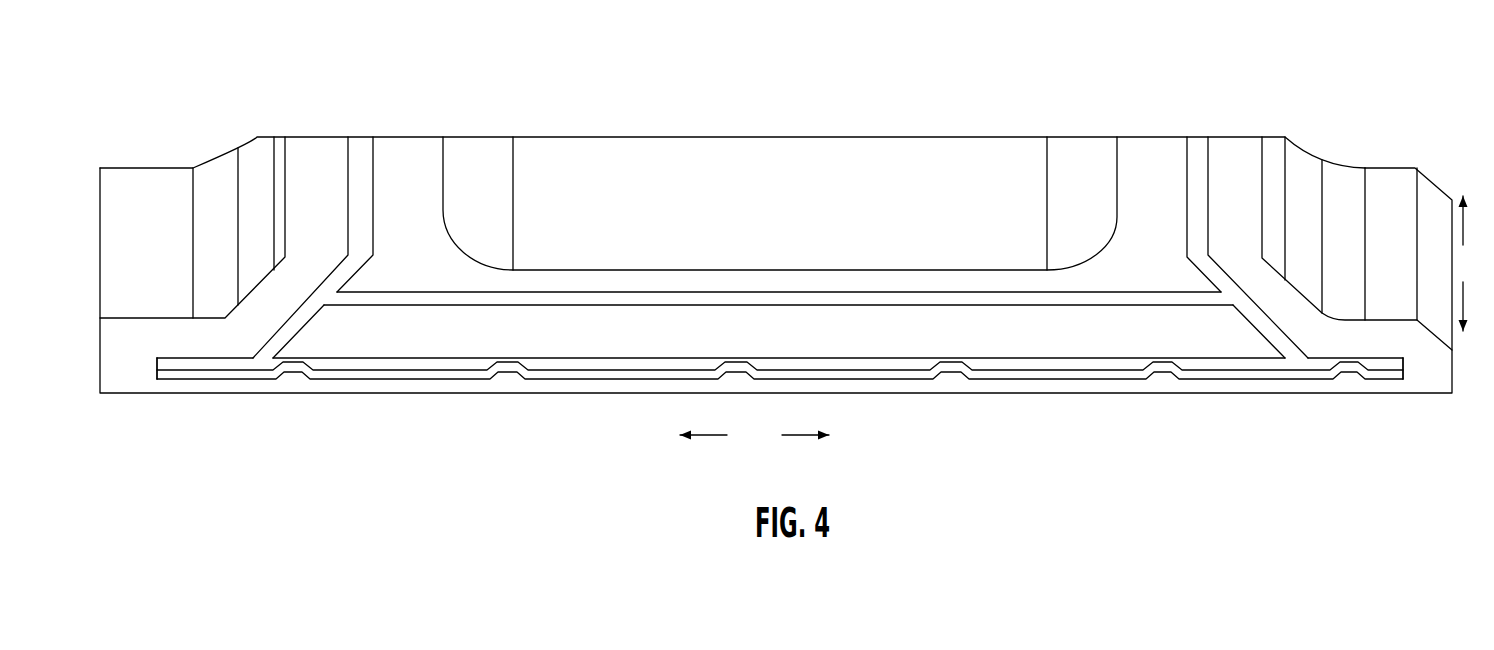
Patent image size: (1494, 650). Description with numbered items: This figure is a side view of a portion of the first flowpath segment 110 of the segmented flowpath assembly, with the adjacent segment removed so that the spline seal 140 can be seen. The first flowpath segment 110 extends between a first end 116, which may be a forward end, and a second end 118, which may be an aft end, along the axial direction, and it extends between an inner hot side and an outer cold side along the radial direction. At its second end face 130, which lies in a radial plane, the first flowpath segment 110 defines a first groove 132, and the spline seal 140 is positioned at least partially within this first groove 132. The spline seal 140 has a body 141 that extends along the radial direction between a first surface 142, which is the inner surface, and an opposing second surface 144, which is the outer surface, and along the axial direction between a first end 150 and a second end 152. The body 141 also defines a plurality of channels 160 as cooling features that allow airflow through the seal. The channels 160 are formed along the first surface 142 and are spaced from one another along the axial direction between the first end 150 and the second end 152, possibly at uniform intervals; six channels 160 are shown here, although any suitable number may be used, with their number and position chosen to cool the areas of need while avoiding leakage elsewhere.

The first flowpath segment 110 is at (684, 103).
The first end 116 is at (103, 434).
The second end 118 is at (1433, 431).
The second end face 130 is at (302, 159).
The first groove 132 is at (862, 347).
The spline seal 140 is at (780, 275).
The body 141 is at (399, 373).
The first surface 142 is at (578, 391).
The second surface 144 is at (584, 348).
The first end 150 is at (161, 397).
The second end 152 is at (1382, 399).
The channels 160 is at (292, 396).